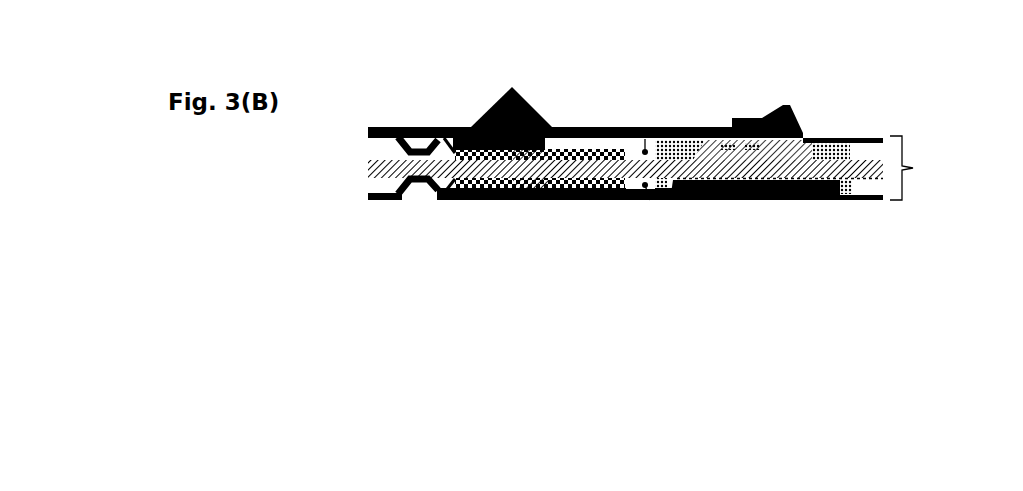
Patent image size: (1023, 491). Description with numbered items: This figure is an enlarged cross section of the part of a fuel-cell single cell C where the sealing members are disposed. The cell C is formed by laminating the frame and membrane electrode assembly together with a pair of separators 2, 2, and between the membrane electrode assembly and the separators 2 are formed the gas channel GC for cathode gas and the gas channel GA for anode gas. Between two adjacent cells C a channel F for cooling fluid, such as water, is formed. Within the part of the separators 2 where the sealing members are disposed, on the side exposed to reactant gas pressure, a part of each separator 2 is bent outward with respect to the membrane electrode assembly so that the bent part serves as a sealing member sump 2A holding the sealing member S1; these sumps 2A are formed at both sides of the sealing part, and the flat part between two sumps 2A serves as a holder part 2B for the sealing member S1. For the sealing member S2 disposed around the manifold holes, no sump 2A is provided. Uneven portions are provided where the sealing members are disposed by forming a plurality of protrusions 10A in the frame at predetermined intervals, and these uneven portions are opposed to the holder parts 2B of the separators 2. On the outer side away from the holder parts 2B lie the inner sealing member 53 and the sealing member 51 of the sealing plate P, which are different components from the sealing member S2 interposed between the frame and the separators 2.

The separator 2 is at (364, 139).
The sealing plate P is at (403, 126).
The holder part 2B is at (458, 141).
The inner sealing member 53 is at (527, 88).
The sealing member sump 2A is at (440, 194).
The protrusion 10A is at (800, 124).
The gas channel for cathode gas GC is at (653, 128).
The gas channel for anode gas GA is at (650, 200).
The sealing member S2 is at (683, 128).
The sealing member 51 is at (783, 105).
The channel for cooling fluid F is at (843, 199).
The fuel-cell single cell C is at (922, 168).